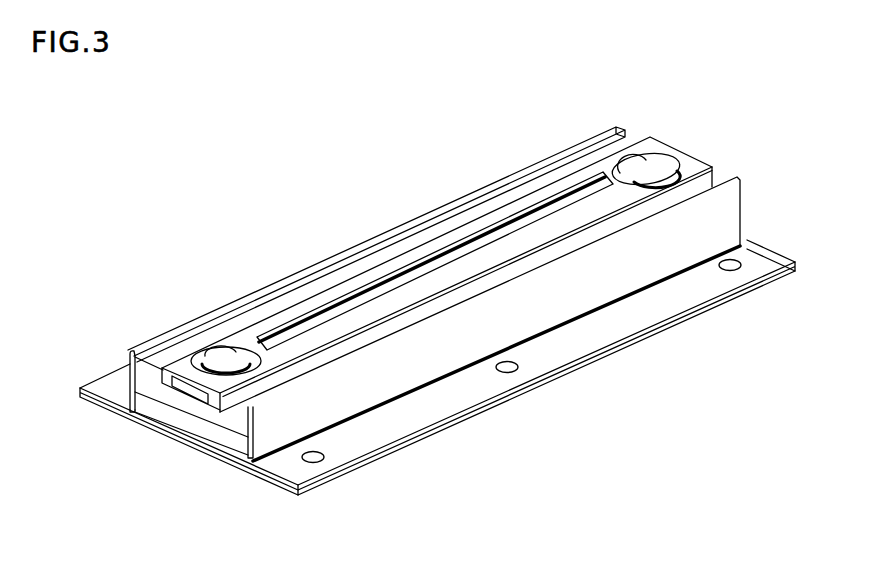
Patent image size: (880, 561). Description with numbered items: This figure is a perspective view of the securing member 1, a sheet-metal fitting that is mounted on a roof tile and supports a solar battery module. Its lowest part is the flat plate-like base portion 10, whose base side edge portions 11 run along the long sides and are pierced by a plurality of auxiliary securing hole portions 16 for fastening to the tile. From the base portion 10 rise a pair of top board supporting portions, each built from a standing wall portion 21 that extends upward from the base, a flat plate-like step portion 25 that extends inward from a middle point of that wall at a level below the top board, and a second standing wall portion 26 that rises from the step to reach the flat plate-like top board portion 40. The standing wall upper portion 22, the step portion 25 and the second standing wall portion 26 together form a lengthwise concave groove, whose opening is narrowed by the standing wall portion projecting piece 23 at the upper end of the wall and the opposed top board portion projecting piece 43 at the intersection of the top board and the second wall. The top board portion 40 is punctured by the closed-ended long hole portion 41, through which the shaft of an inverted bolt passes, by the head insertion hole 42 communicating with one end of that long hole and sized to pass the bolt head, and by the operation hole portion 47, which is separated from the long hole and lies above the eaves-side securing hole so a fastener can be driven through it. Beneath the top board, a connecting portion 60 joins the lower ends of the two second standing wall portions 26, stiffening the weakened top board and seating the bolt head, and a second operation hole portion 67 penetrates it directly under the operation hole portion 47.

The securing member 1 is at (320, 184).
The base portion 10 is at (265, 470).
The base side edge portion 11 is at (607, 318).
The auxiliary securing hole portion 16 is at (746, 266).
The standing wall portion 21 is at (373, 386).
The standing wall upper portion 22 is at (129, 362).
The standing wall portion projecting piece 23 is at (136, 354).
The step portion 25 is at (128, 400).
The second standing wall portion 26 is at (277, 382).
The top board portion 40 is at (462, 233).
The long hole portion 41 is at (358, 308).
The head insertion hole 42 is at (630, 170).
The top board portion projecting piece 43 is at (163, 367).
The operation hole portion 47 is at (212, 362).
The connecting portion 60 is at (175, 383).
The second operation hole portion 67 is at (203, 355).